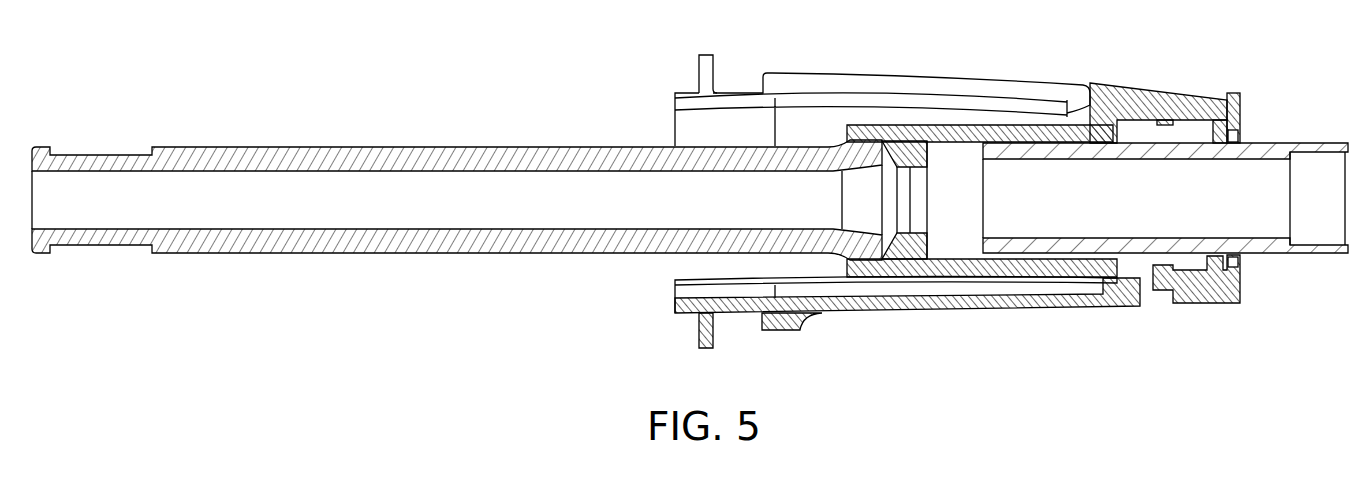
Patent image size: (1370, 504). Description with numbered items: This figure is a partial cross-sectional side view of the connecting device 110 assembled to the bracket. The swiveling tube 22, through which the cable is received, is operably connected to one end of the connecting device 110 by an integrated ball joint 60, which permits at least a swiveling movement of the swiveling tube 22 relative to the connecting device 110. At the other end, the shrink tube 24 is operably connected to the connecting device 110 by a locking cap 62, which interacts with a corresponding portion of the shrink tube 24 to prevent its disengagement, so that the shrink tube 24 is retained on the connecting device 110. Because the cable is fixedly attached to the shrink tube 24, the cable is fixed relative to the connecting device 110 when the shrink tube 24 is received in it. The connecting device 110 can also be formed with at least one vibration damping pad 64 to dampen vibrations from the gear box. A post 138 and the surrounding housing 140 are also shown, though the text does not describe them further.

The swiveling tube 22 is at (248, 160).
The shrink tube 24 is at (1274, 246).
The integrated ball joint 60 is at (865, 275).
The locking cap 62 is at (1190, 288).
The vibration damping pad 64 is at (1192, 132).
The connecting device 110 is at (1009, 336).
The housing post 138 is at (708, 55).
The housing 140 is at (890, 88).